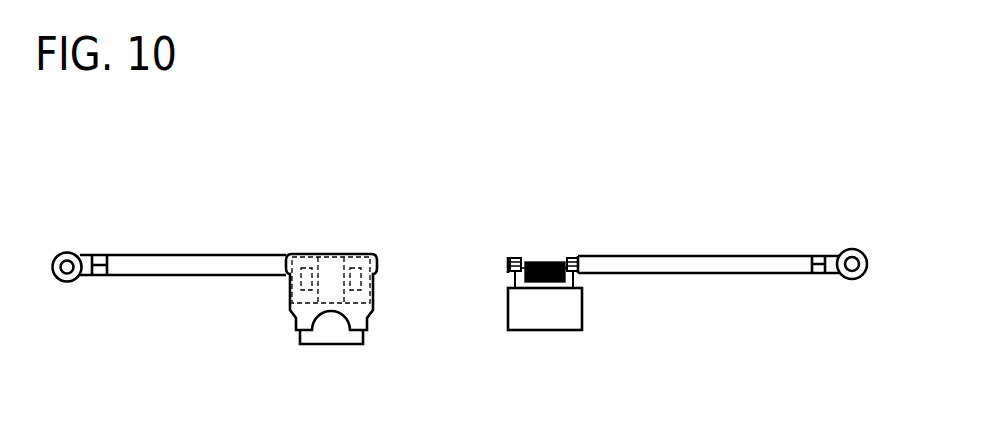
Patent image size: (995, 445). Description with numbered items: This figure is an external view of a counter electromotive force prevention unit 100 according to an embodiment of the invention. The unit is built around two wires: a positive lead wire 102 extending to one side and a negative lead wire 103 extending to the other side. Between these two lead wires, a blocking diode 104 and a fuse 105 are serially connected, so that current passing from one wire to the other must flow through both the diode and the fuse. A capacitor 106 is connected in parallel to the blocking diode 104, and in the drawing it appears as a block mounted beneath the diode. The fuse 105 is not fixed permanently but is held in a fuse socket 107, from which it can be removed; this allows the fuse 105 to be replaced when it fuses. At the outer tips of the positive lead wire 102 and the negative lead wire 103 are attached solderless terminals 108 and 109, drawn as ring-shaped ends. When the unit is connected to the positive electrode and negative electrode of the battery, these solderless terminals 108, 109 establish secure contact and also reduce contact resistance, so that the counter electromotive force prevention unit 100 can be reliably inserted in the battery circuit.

The counter electromotive force prevention unit 100 is at (468, 184).
The positive lead wire 102 is at (187, 255).
The negative lead wire 103 is at (700, 253).
The blocking diode 104 is at (543, 262).
The fuse 105 is at (353, 345).
The capacitor 106 is at (552, 330).
The fuse socket 107 is at (315, 252).
The solderless terminal 108 is at (68, 282).
The solderless terminal 109 is at (850, 278).